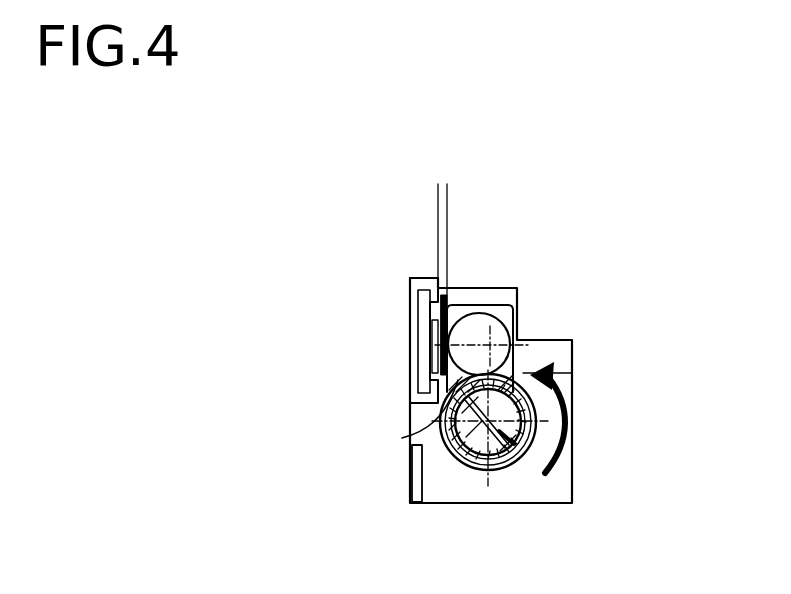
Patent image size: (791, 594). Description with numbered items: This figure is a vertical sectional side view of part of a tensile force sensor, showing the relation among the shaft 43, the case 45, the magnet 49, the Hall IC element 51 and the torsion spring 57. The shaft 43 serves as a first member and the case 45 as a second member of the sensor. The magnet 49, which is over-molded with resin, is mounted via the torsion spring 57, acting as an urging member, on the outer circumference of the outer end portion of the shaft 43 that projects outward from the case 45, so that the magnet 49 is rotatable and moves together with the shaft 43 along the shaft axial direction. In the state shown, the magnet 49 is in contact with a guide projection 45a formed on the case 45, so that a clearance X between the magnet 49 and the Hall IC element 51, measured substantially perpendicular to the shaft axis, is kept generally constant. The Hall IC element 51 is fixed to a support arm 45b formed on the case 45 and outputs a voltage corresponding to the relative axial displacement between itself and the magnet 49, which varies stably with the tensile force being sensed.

The clearance X is at (457, 209).
The shaft 43 is at (480, 455).
The case 45 is at (525, 503).
The guide projection 45a is at (402, 438).
The support arm 45b is at (409, 378).
The magnet 49 is at (483, 326).
The Hall IC element 51 is at (436, 343).
The torsion spring 57 is at (537, 385).